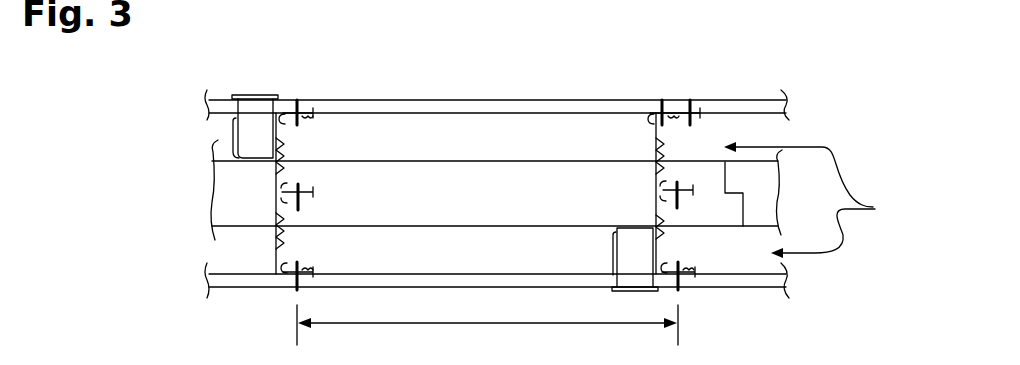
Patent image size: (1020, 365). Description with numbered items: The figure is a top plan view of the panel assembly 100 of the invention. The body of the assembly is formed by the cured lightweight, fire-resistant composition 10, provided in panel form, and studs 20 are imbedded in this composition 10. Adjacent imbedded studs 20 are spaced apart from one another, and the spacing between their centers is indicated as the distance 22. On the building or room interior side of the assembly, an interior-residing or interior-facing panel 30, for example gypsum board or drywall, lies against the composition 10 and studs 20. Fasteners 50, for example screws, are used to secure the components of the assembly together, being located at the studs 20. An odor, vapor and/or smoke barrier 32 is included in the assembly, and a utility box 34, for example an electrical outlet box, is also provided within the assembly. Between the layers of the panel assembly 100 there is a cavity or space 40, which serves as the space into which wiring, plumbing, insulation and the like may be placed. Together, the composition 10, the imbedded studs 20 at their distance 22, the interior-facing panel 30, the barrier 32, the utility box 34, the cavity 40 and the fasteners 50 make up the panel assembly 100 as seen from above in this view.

The panel assembly 100 is at (364, 59).
The lightweight, fire-resistant composition 10 is at (400, 180).
The stud 20 is at (280, 238).
The distance between centers of spaced apart, adjacent, imbedded studs 22 is at (493, 323).
The building/room-interior-residing/facing panel 30 is at (548, 275).
The odor, vapor and/or smoke barrier 32 is at (727, 185).
The utility box 34 is at (250, 130).
The cavity or space 40 is at (819, 200).
The fasteners 50 is at (298, 272).